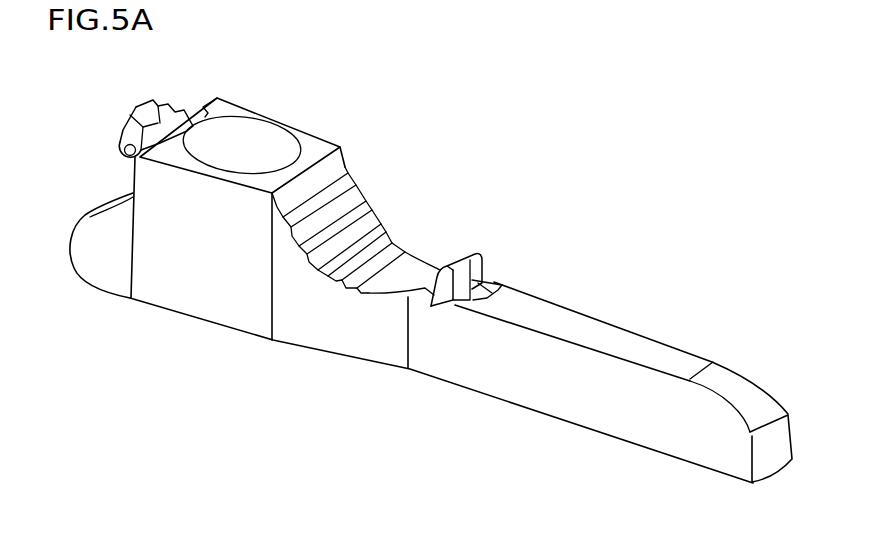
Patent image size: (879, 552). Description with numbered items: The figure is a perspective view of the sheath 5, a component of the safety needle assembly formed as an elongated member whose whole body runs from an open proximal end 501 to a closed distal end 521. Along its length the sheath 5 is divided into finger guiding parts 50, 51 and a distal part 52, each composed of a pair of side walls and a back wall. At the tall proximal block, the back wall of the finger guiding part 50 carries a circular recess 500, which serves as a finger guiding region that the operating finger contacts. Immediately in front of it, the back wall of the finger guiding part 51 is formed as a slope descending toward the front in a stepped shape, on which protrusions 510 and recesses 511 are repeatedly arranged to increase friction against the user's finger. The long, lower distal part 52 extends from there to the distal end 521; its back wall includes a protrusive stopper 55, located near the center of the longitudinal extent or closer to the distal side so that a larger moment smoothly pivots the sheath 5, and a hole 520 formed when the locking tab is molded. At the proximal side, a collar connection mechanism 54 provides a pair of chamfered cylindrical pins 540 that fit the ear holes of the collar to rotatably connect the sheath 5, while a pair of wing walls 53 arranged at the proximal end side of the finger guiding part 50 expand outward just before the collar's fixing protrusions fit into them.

The sheath 5 is at (345, 113).
The finger guiding part 50 is at (223, 303).
The circular recess 500 is at (250, 135).
The proximal end 501 is at (204, 104).
The finger guiding part 51 is at (342, 323).
The protrusions 510 is at (347, 178).
The recesses 511 is at (358, 194).
The distal part 52 is at (600, 400).
The hole 520 is at (492, 282).
The distal end 521 is at (767, 452).
The wing walls 53 is at (105, 273).
The collar connection mechanism 54 is at (132, 130).
The cylindrical pins 540 is at (121, 154).
The stopper 55 is at (445, 266).